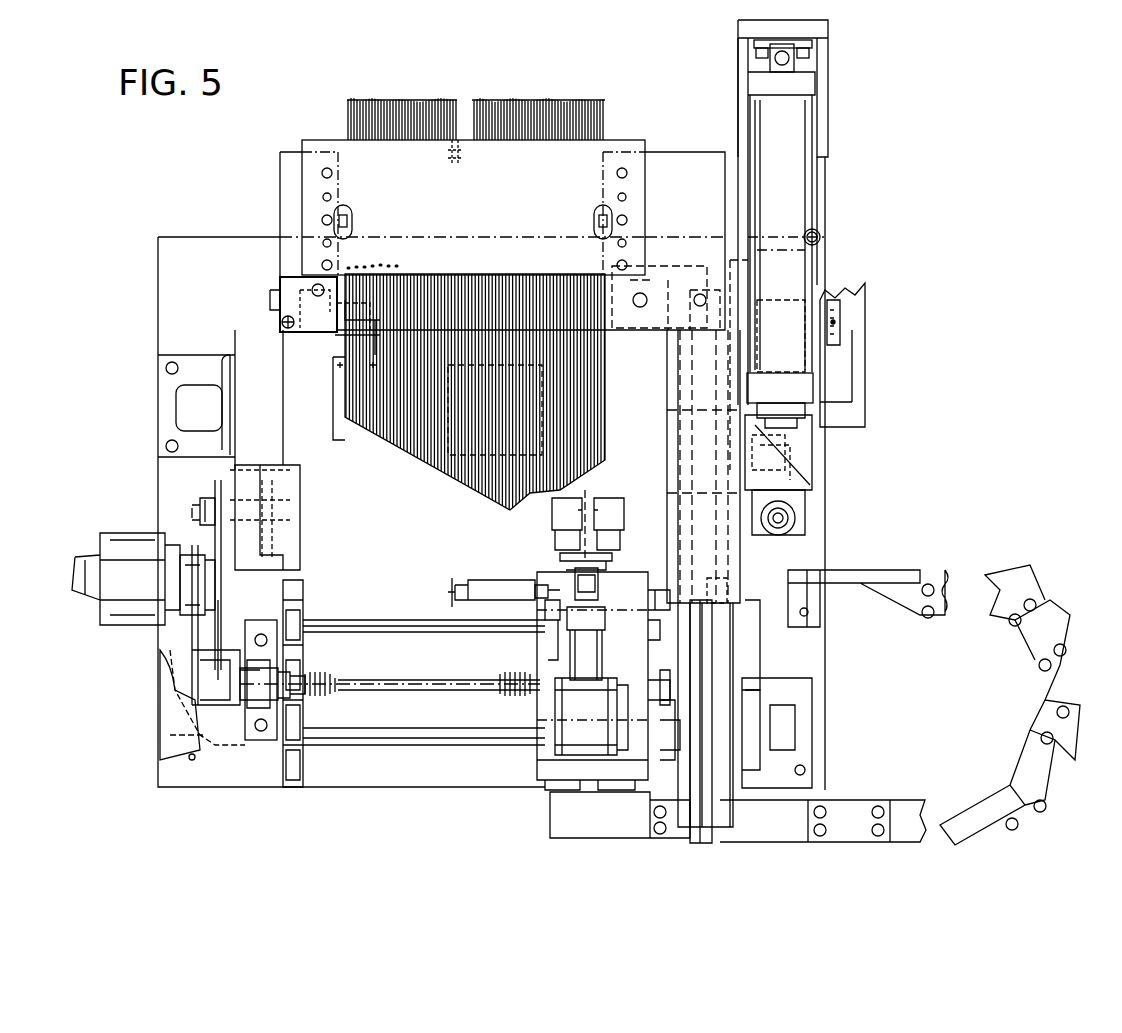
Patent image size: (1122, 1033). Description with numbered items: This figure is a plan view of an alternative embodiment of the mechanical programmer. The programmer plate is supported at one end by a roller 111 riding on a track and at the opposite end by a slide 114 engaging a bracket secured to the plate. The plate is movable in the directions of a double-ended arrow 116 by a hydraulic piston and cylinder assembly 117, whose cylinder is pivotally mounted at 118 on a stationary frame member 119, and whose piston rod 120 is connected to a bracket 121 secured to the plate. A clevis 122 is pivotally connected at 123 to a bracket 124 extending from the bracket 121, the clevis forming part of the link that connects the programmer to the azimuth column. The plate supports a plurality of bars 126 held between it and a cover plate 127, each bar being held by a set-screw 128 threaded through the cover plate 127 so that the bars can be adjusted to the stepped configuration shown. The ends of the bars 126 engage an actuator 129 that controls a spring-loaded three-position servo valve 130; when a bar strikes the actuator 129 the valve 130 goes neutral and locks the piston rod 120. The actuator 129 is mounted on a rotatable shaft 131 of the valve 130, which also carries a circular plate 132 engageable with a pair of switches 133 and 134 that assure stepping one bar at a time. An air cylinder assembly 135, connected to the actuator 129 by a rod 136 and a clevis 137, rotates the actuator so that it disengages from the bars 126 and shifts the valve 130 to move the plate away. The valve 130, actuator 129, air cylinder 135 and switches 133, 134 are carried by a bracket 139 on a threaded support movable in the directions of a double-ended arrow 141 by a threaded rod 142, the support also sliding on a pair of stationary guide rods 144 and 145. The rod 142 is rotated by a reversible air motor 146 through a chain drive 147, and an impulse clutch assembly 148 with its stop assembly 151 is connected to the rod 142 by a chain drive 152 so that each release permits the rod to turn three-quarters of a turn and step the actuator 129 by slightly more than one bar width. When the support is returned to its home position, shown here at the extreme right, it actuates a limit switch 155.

The roller 111 is at (283, 277).
The slide 114 is at (695, 847).
The double-ended arrow 116 is at (492, 162).
The hydraulic piston and cylinder assembly 117 is at (800, 178).
The pivotal mounting 118 is at (790, 58).
The stationary frame member 119 is at (738, 58).
The piston rod 120 is at (798, 437).
The bracket 121 is at (810, 487).
The clevis 122 is at (790, 522).
The pivotal connection 123 is at (792, 516).
The bracket 124 is at (800, 500).
The bars 126 is at (432, 465).
The cover plate 127 is at (608, 140).
The set-screw 128 is at (382, 264).
The actuator 129 is at (598, 585).
The three-position servo valve 130 is at (560, 702).
The shaft 131 is at (590, 598).
The circular plate 132 is at (560, 556).
The switch 133 is at (610, 500).
The switch 134 is at (553, 522).
The air cylinder assembly 135 is at (488, 582).
The rod 136 is at (542, 585).
The clevis 137 is at (556, 598).
The bracket 139 is at (540, 760).
The double-ended arrow 141 is at (606, 776).
The threaded rod 142 is at (322, 690).
The guide rod 144 is at (355, 745).
The guide rod 145 is at (360, 632).
The air motor 146 is at (146, 535).
The chain drive 147 is at (190, 638).
The impulse clutch assembly 148 is at (188, 511).
The stop assembly 151 is at (222, 485).
The chain drive 152 is at (222, 592).
The limit switch 155 is at (660, 548).